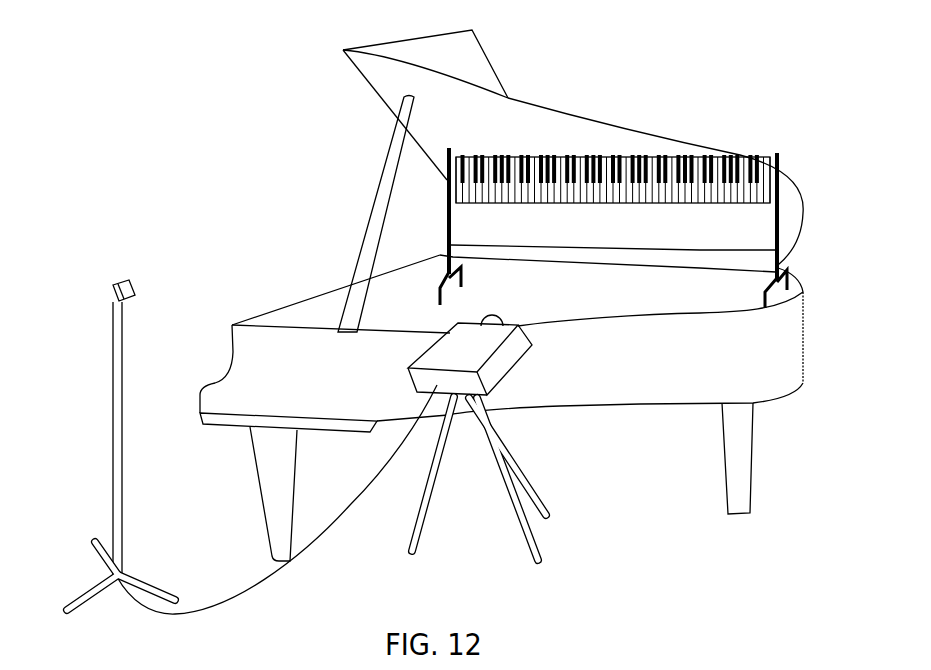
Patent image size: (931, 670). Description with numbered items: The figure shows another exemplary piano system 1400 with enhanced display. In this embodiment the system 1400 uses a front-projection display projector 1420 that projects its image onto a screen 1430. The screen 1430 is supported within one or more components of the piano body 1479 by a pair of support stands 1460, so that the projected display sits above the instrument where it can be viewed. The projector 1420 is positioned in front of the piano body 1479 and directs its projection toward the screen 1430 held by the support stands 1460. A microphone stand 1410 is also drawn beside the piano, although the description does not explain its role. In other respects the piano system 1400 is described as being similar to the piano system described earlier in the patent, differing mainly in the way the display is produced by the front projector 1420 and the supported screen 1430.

The piano system 1400 is at (756, 94).
The microphone 1410 is at (113, 285).
The front-projection display projector 1420 is at (500, 365).
The screen 1430 is at (758, 158).
The support stands 1460 is at (779, 278).
The piano body 1479 is at (756, 349).